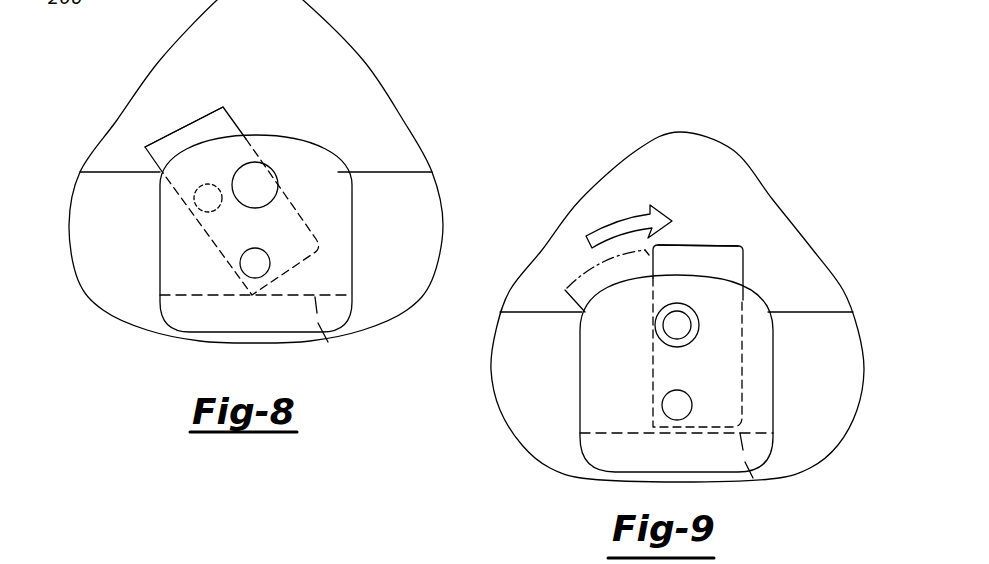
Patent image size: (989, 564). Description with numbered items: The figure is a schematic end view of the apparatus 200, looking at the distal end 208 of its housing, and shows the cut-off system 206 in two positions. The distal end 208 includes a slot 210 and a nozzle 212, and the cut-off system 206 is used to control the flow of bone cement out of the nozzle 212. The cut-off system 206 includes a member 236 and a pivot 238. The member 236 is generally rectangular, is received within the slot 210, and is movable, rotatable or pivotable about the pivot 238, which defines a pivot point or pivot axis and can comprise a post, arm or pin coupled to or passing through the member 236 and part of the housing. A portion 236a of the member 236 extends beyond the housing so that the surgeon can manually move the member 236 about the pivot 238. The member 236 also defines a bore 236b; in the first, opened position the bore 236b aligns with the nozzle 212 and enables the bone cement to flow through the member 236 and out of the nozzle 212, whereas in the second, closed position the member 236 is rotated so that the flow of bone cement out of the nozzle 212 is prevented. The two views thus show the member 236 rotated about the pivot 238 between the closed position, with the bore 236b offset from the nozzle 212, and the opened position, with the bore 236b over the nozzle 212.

In FIG. 8, the apparatus 200 is at (382, 58).
In FIG. 9, the apparatus 200 is at (782, 160).
In FIG. 8, the cut-off system 206 is at (150, 189).
In FIG. 9, the cut-off system 206 is at (570, 314).
In FIG. 8, the distal end 208 is at (165, 322).
In FIG. 9, the distal end 208 is at (595, 463).
In FIG. 8, the slot 210 is at (332, 352).
In FIG. 9, the slot 210 is at (757, 488).
In FIG. 8, the nozzle 212 is at (268, 205).
In FIG. 9, the nozzle 212 is at (688, 345).
In FIG. 8, the member 236 is at (242, 117).
In FIG. 9, the member 236 is at (712, 245).
In FIG. 8, the portion of the member 236a is at (180, 122).
In FIG. 9, the portion of the member 236a is at (682, 245).
In FIG. 8, the bore 236b is at (207, 213).
In FIG. 9, the bore 236b is at (667, 342).
In FIG. 8, the pivot 238 is at (247, 277).
In FIG. 9, the pivot 238 is at (670, 418).